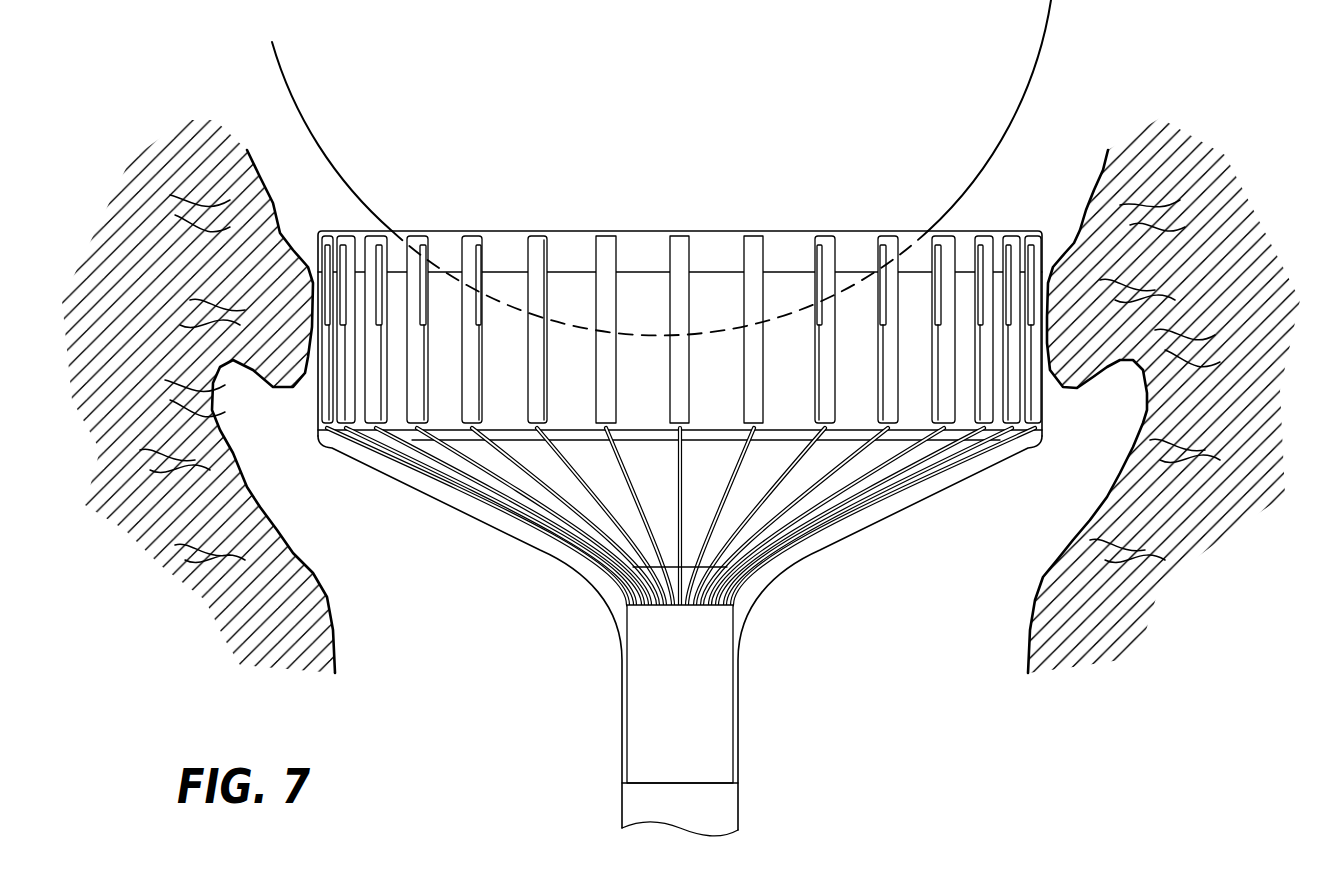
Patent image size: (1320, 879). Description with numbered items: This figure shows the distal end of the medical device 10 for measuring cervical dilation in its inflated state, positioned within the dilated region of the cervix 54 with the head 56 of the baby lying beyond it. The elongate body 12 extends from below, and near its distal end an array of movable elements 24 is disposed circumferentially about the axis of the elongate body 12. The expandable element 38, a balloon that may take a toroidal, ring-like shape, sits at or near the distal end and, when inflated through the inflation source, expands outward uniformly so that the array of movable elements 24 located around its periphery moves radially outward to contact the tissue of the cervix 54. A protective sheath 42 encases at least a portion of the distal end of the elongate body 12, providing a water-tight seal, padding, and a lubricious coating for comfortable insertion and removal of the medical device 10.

The medical device 10 is at (484, 618).
The elongate body 12 is at (738, 805).
The array of movable elements 24 is at (535, 232).
The expandable element 38 is at (640, 272).
The protective sheath 42 is at (783, 230).
The cervix 54 is at (296, 248).
The head of the baby 56 is at (1040, 78).